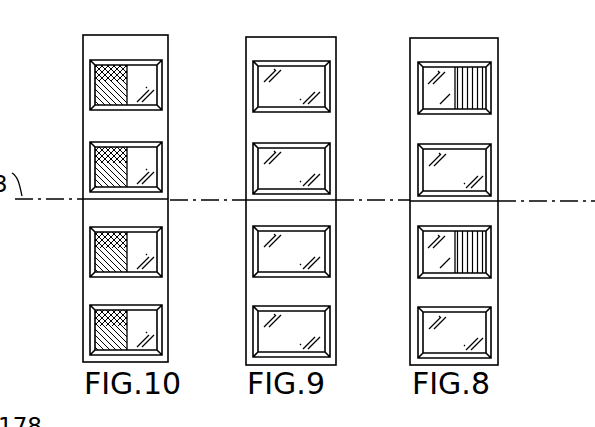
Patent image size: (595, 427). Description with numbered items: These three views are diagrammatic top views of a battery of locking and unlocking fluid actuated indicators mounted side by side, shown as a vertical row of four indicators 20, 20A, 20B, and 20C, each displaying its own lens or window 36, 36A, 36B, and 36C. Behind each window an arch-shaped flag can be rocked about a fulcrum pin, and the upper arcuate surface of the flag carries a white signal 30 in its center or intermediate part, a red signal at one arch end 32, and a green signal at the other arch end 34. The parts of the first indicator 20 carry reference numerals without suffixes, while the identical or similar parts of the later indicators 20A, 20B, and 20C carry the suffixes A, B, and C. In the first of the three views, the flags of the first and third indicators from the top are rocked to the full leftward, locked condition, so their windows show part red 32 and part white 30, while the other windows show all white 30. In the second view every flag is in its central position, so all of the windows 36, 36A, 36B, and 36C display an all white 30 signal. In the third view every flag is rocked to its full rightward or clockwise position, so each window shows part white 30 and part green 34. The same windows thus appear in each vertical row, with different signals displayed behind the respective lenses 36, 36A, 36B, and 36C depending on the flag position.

In FIG. 10, the fluid actuated indicator 20 is at (92, 44).
In FIG. 9, the fluid actuated indicator 20 is at (307, 40).
In FIG. 8, the fluid actuated indicator 20 is at (493, 48).
In FIG. 10, the indicator 20A is at (92, 130).
In FIG. 9, the indicator 20A is at (318, 132).
In FIG. 8, the indicator 20A is at (482, 134).
In FIG. 10, the indicator 20B is at (95, 208).
In FIG. 9, the indicator 20B is at (320, 212).
In FIG. 8, the indicator 20B is at (490, 214).
In FIG. 10, the indicator 20C is at (93, 290).
In FIG. 9, the indicator 20C is at (315, 292).
In FIG. 8, the indicator 20C is at (484, 292).
In FIG. 10, the white signal 30 is at (150, 72).
In FIG. 9, the white signal 30 is at (268, 175).
In FIG. 8, the white signal 30 is at (430, 95).
In FIG. 8, the red arch end 32 is at (478, 93).
In FIG. 10, the green arch end 34 is at (102, 80).
In FIG. 10, the lens or window 36 is at (155, 97).
In FIG. 9, the lens or window 36 is at (315, 80).
In FIG. 8, the lens or window 36 is at (482, 77).
In FIG. 9, the lens or window 36A is at (312, 170).
In FIG. 8, the lens or window 36A is at (480, 180).
In FIG. 10, the lens or window 36B is at (97, 258).
In FIG. 9, the lens or window 36B is at (312, 243).
In FIG. 8, the lens or window 36B is at (482, 262).
In FIG. 10, the lens or window 36C is at (97, 340).
In FIG. 9, the lens or window 36C is at (312, 332).
In FIG. 8, the lens or window 36C is at (480, 343).